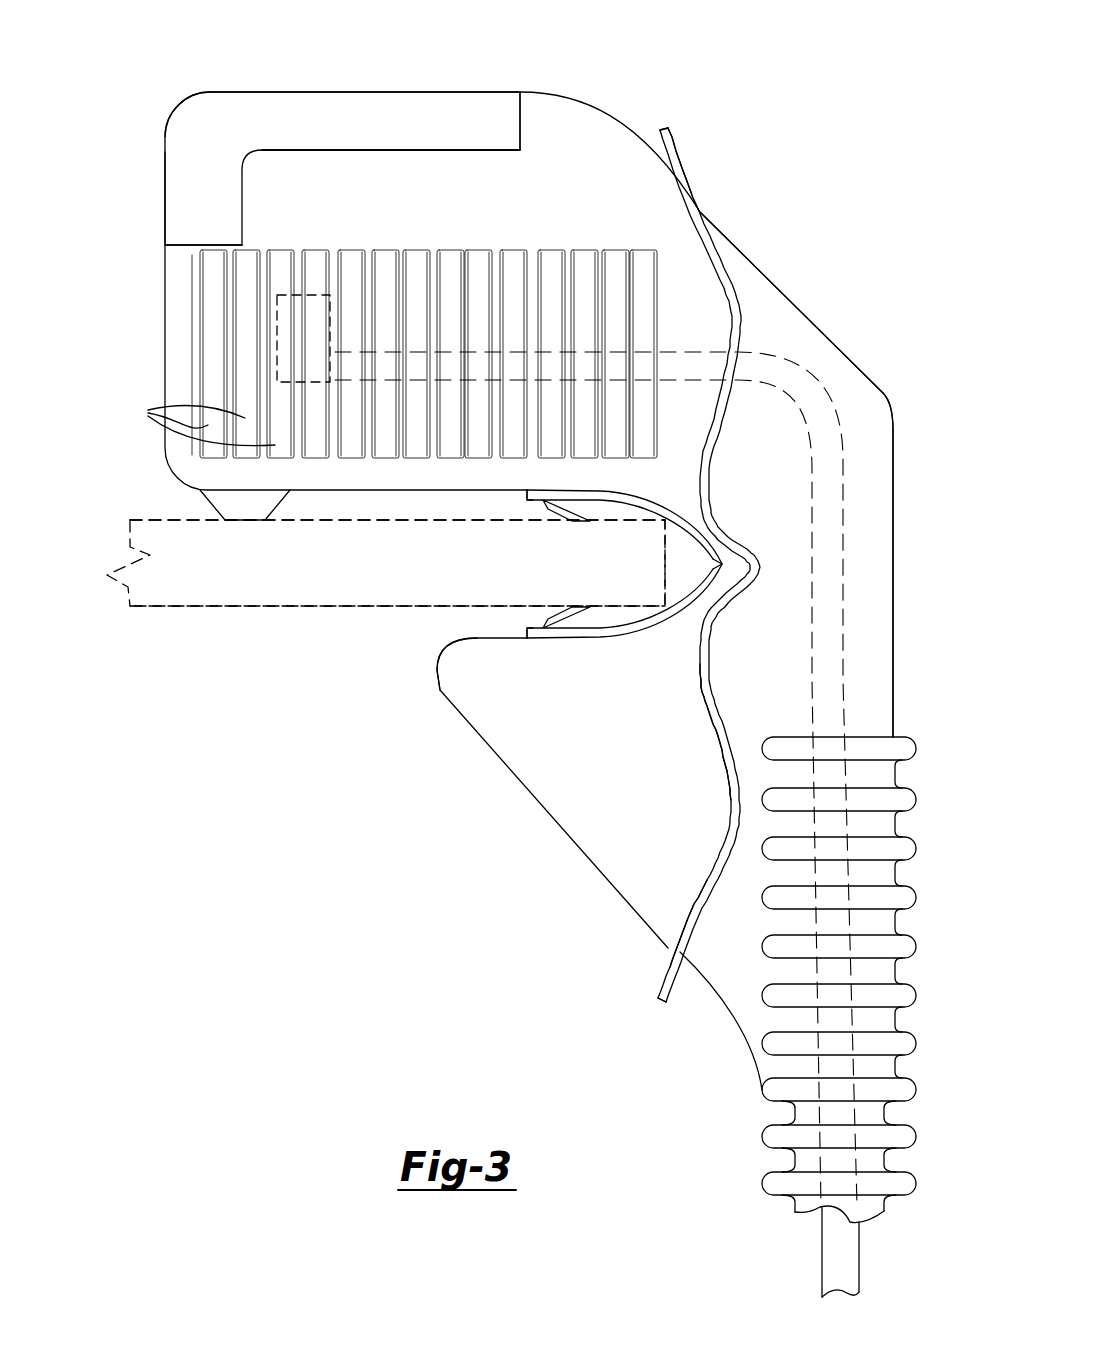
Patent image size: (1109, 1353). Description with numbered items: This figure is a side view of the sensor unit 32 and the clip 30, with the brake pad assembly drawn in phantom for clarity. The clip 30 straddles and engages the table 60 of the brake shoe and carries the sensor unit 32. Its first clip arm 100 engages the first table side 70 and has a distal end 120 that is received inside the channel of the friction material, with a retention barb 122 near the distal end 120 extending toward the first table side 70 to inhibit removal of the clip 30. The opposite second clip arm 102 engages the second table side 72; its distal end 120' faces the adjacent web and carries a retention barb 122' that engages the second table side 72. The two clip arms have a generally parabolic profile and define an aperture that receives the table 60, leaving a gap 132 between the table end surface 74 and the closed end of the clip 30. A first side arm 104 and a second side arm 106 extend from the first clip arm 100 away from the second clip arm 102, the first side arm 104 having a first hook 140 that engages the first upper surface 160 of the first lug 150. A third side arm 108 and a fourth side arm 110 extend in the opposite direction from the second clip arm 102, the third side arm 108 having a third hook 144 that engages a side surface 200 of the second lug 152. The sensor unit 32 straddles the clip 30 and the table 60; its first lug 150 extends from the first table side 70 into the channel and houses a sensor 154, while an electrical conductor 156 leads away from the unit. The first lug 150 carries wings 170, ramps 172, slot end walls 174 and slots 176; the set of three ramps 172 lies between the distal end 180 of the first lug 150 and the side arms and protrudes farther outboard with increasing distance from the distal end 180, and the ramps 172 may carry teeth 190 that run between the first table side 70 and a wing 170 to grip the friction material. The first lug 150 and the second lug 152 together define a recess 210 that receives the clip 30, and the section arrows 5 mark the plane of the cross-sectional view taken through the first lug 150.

The section line 5- 5 is at (150, 320).
The clip 30 is at (727, 451).
The sensor unit 32 is at (892, 385).
The table 60 is at (120, 560).
The first table side 70 is at (160, 520).
The second table side 72 is at (252, 608).
The table end surface 74 is at (665, 566).
The first clip arm 100 is at (628, 500).
The second clip arm 102 is at (628, 626).
The first side arm 104 is at (697, 209).
The second side arm 106 is at (680, 165).
The third side arm 108 is at (713, 727).
The fourth side arm 110 is at (665, 955).
The distal end 120 is at (516, 523).
The distal end 120' is at (519, 601).
The retention barb 122 is at (570, 528).
The retention barb 122' is at (573, 596).
The gap 132 is at (727, 560).
The first hook 140 is at (663, 141).
The third hook 144 is at (658, 1002).
The first lug 150 is at (545, 93).
The second lug 152 is at (435, 682).
The sensor 154 is at (277, 342).
The electrical conductor 156 is at (822, 1268).
The first upper surface 160 is at (797, 303).
The wing 170 is at (225, 92).
The ramp 172 is at (551, 252).
The slot end wall 174 is at (164, 165).
The slot 176 is at (532, 193).
The distal end 180 is at (164, 220).
The teeth 190 is at (196, 422).
The side surface 200 is at (507, 757).
The recess 210 is at (445, 624).